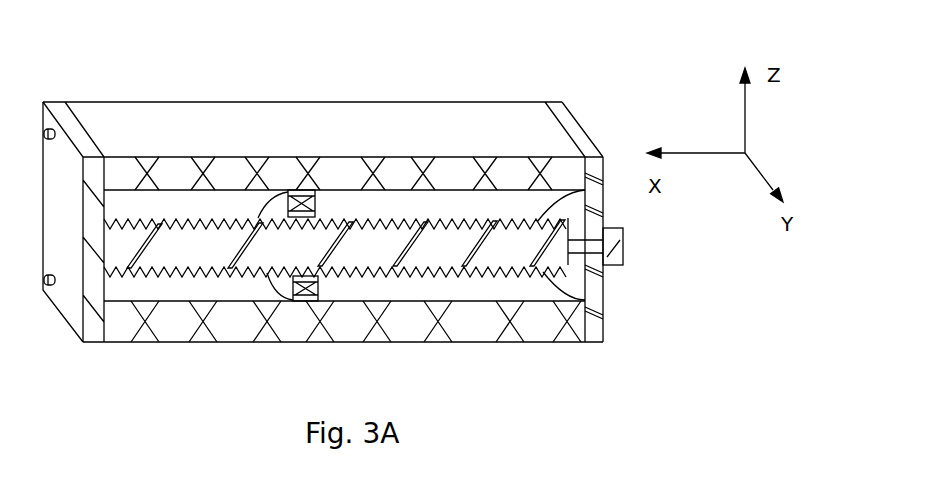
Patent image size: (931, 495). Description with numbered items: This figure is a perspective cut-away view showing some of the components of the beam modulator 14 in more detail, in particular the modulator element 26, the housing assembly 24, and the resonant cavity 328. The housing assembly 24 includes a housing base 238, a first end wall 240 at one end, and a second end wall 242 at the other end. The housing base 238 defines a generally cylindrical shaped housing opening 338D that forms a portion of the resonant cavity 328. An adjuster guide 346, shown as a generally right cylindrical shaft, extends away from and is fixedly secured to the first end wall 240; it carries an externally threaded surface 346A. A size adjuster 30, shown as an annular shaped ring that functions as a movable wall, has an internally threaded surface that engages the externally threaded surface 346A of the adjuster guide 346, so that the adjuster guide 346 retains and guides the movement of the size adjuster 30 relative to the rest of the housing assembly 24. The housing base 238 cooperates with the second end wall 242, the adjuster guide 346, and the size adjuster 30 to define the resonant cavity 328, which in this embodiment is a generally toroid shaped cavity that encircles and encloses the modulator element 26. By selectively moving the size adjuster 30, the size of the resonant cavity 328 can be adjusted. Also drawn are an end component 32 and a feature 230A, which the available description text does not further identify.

The beam modulator 14 is at (516, 82).
The housing assembly 24 is at (434, 115).
The modulator element 26 is at (576, 224).
The size adjuster 30 is at (260, 202).
The drive coupling 32 is at (624, 248).
The housing base 238 is at (133, 120).
The first end wall 240 is at (67, 325).
The second end wall 242 is at (598, 303).
The paddle 230A is at (310, 262).
The resonant cavity 328 is at (470, 292).
The housing opening 338D is at (533, 292).
The adjuster guide 346 is at (212, 262).
The externally threaded surface 346A is at (143, 270).